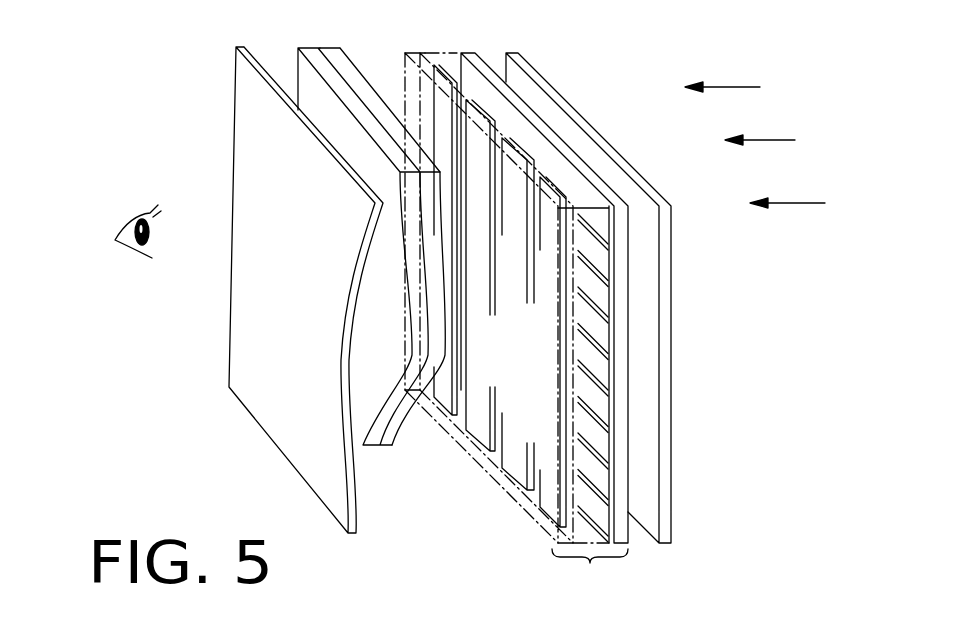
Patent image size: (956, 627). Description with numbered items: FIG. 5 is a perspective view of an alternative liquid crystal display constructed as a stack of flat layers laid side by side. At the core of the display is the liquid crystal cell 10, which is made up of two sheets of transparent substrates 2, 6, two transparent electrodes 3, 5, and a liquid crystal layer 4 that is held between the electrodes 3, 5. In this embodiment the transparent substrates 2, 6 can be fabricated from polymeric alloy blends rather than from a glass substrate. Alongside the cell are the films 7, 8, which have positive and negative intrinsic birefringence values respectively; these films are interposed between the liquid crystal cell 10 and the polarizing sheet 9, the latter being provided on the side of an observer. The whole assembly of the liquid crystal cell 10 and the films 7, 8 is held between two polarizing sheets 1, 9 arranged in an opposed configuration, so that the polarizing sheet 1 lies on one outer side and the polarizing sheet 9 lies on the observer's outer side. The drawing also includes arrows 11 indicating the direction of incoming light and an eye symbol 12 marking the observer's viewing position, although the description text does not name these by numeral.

The polarizing sheet 1 is at (513, 53).
The transparent substrate 2 is at (470, 53).
The transparent electrode 3 is at (612, 334).
The liquid crystal layer 4 is at (447, 53).
The transparent electrode 5 is at (483, 118).
The transparent substrate 6 is at (405, 53).
The film having positive intrinsic birefringence 7 is at (320, 48).
The film having negative intrinsic birefringence 8 is at (300, 48).
The polarizing sheet 9 is at (236, 47).
The liquid crystal cell 10 is at (590, 570).
The incident light 11 is at (793, 140).
The observer eye 12 is at (138, 223).